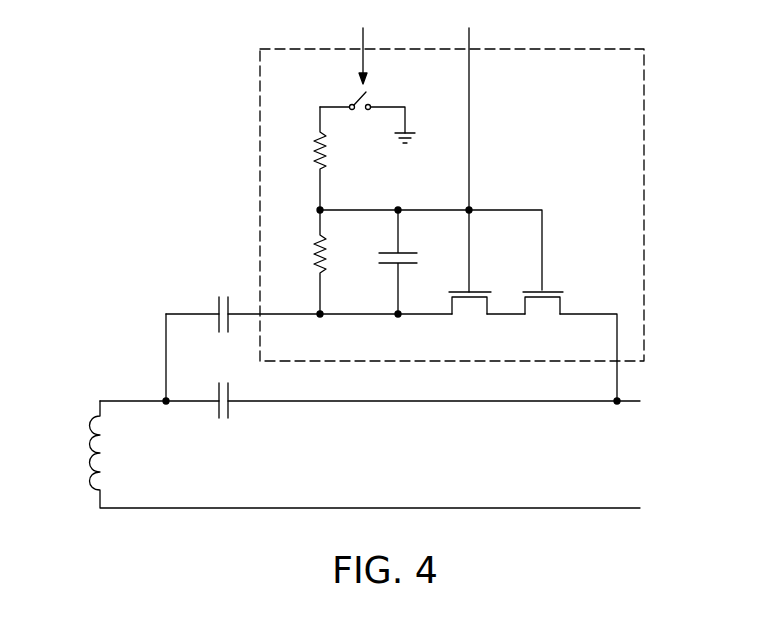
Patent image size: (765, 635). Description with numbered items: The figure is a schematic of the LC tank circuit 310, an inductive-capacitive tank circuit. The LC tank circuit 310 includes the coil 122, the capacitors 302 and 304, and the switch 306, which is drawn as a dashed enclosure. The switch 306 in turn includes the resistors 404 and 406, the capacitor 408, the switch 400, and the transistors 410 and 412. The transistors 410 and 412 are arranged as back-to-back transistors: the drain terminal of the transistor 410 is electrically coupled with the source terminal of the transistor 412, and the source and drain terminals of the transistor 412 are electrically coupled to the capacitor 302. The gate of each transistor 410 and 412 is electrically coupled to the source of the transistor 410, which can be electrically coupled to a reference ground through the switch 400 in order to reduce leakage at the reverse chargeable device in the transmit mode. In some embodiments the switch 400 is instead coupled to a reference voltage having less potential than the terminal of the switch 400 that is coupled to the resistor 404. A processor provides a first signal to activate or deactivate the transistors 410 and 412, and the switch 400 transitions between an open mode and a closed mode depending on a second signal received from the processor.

The LC tank circuit 310 is at (118, 85).
The switch 306 is at (644, 142).
The switch 400 is at (352, 99).
The resistor 404 is at (313, 152).
The resistor 406 is at (312, 254).
The capacitor 408 is at (390, 250).
The transistor 410 is at (462, 289).
The transistor 412 is at (538, 289).
The capacitor 302 is at (224, 296).
The capacitor 304 is at (224, 380).
The coil 122 is at (88, 463).